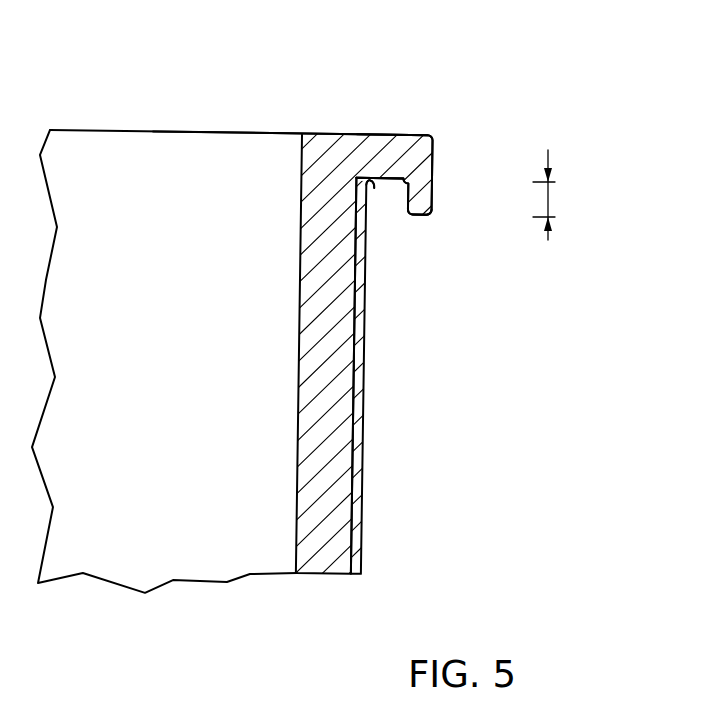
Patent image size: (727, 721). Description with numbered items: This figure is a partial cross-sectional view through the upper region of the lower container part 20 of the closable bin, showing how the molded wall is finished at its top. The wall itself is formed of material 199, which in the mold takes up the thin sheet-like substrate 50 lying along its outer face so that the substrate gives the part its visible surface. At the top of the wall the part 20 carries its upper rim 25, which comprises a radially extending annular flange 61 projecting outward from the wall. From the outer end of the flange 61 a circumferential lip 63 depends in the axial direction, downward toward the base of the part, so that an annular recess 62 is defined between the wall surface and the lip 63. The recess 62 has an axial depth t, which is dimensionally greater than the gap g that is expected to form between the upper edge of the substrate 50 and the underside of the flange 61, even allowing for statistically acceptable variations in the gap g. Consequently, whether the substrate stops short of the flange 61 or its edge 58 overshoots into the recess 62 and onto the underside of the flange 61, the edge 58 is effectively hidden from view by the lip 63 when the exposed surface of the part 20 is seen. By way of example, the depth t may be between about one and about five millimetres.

The lower container part 20 is at (263, 131).
The upper rim 25 is at (421, 134).
The substrate 50 is at (362, 368).
The edge 58 is at (372, 186).
The annular flange 61 is at (387, 176).
The annular recess 62 is at (383, 191).
The circumferential lip 63 is at (433, 218).
The material 199 is at (322, 543).
The gap g is at (349, 176).
The depth t is at (550, 200).